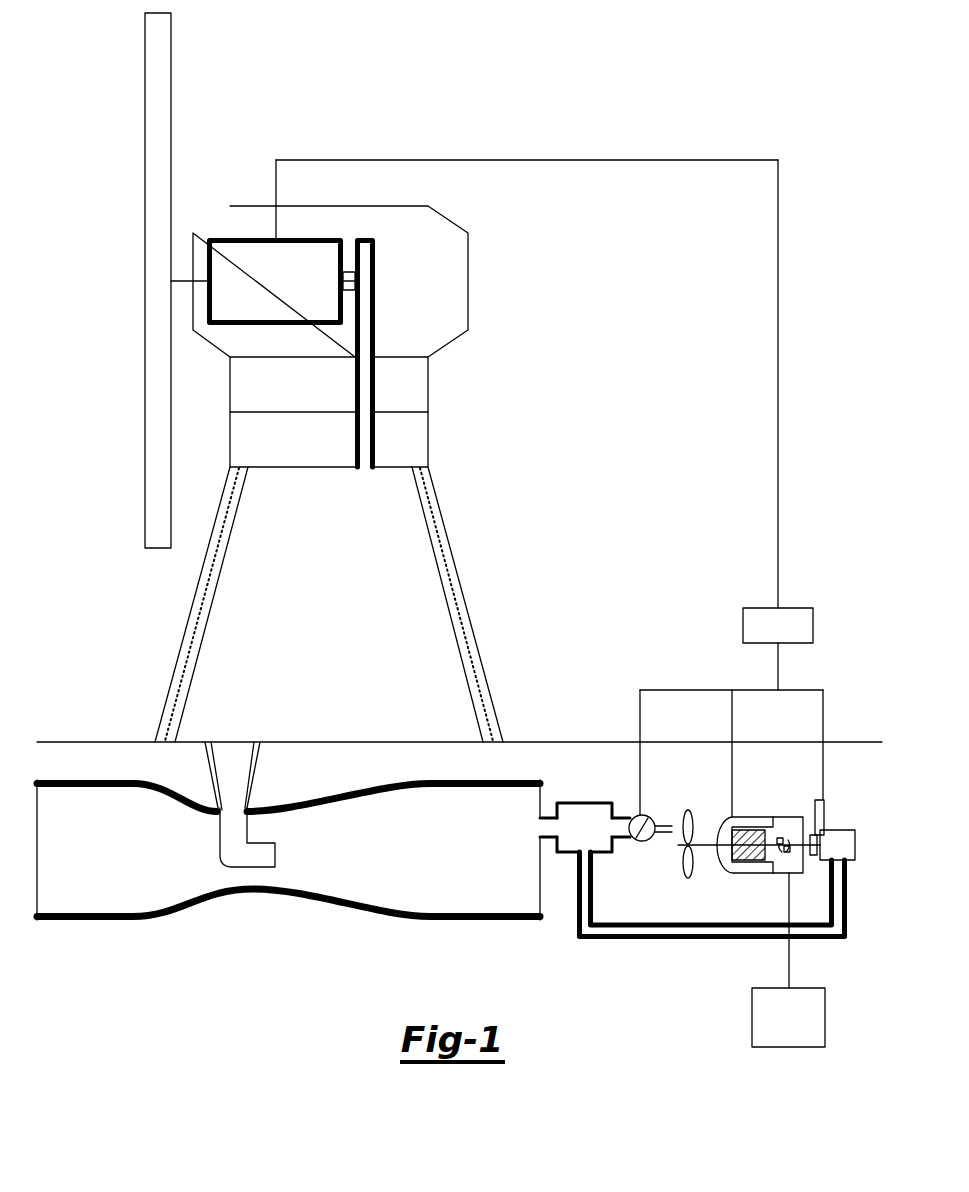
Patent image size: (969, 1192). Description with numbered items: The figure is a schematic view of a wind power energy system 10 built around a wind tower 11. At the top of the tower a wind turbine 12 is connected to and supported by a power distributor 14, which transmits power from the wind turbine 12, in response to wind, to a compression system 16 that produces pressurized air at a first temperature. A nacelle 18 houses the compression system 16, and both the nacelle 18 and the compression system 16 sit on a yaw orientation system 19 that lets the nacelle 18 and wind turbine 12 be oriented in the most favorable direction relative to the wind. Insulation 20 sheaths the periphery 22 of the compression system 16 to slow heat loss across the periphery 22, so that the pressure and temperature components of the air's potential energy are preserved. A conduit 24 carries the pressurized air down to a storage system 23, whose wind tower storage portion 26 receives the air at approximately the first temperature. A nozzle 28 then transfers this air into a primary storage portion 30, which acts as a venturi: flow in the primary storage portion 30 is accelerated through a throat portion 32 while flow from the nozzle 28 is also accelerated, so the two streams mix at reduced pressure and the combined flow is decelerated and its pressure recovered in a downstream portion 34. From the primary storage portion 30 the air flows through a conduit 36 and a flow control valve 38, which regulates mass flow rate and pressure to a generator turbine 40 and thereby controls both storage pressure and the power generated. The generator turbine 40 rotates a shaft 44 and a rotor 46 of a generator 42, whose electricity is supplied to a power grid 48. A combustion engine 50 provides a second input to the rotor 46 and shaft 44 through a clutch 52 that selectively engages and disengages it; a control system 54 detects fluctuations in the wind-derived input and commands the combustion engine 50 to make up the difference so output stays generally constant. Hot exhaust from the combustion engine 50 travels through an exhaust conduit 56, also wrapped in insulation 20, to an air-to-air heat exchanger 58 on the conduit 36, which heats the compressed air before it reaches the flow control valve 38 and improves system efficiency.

The wind power energy system 10 is at (124, 706).
The wind tower 11 is at (206, 376).
The wind turbine 12 is at (171, 45).
The power distributor 14 is at (180, 281).
The compression system 16 is at (295, 278).
The nacelle 18 is at (450, 218).
The yaw orientation system 19 is at (280, 445).
The insulation 20 is at (372, 283).
The periphery 22 is at (230, 318).
The storage system 23 is at (444, 719).
The conduit 24 is at (367, 255).
The wind tower storage portion 26 is at (363, 542).
The nozzle 28 is at (232, 780).
The primary storage portion 30 is at (90, 867).
The throat portion 32 is at (237, 875).
The downstream portion 34 is at (470, 870).
The conduit 36 is at (547, 812).
The flow control valve 38 is at (648, 842).
The generator turbine 40 is at (687, 812).
The generator 42 is at (752, 887).
The shaft 44 is at (705, 840).
The rotor 46 is at (748, 830).
The power grid 48 is at (778, 1030).
The combustion engine 50 is at (855, 847).
The clutch 52 is at (812, 858).
The control system 54 is at (768, 637).
The exhaust conduit 56 is at (625, 930).
The air-to-air heat exchanger 58 is at (577, 838).